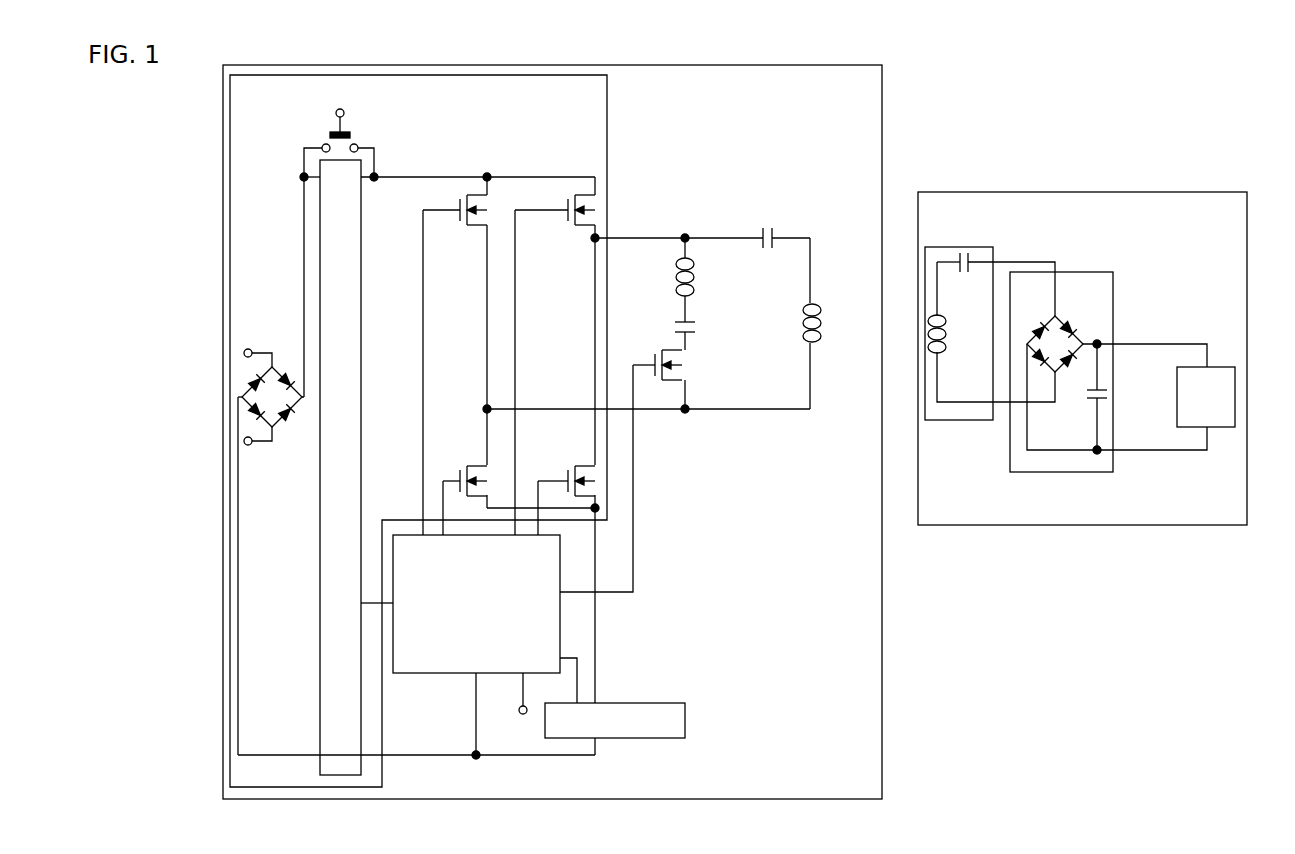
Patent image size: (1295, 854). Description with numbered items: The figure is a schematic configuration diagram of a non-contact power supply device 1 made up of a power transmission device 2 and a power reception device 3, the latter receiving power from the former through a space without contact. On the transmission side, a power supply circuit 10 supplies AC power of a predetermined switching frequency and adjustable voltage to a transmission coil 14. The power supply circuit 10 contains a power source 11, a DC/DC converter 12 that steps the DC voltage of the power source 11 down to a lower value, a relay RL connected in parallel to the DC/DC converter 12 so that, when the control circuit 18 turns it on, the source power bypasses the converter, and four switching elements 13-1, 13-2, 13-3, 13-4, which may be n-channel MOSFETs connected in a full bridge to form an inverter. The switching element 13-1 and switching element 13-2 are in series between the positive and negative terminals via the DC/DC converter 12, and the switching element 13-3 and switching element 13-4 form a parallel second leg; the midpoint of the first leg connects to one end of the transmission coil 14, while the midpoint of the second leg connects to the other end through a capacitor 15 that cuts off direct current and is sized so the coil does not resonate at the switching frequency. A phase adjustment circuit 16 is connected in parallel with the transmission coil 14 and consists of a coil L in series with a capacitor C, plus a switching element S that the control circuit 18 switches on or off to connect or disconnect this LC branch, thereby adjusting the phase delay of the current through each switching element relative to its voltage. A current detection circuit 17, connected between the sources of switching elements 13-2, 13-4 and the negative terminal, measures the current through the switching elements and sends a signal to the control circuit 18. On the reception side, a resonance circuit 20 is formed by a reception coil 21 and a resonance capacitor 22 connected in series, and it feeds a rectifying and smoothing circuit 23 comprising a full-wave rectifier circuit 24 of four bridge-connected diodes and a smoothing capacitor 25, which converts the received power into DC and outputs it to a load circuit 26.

The non-contact power supply device 1 is at (1150, 618).
The power transmission device 2 is at (882, 758).
The power reception device 3 is at (1127, 192).
The power supply circuit 10 is at (607, 188).
The power source 11 is at (285, 430).
The DC/DC converter 12 is at (320, 613).
The switching element 13-1 is at (468, 228).
The switching element 13-2 is at (468, 462).
The switching element 13-3 is at (577, 228).
The switching element 13-4 is at (572, 463).
The transmission coil 14 is at (826, 322).
The capacitor 15 is at (767, 225).
The phase adjustment circuit 16 is at (710, 323).
The coil L is at (692, 280).
The capacitor C is at (698, 328).
The switching element S is at (686, 379).
The relay RL is at (360, 135).
The current detection circuit 17 is at (633, 703).
The control circuit 18 is at (447, 675).
The resonance circuit 20 is at (990, 361).
The reception coil 21 is at (948, 335).
The resonance capacitor 22 is at (970, 275).
The rectifying and smoothing circuit 23 is at (1088, 394).
The full-wave rectifier circuit 24 is at (1063, 318).
The smoothing capacitor 25 is at (1087, 392).
The load circuit 26 is at (1225, 366).